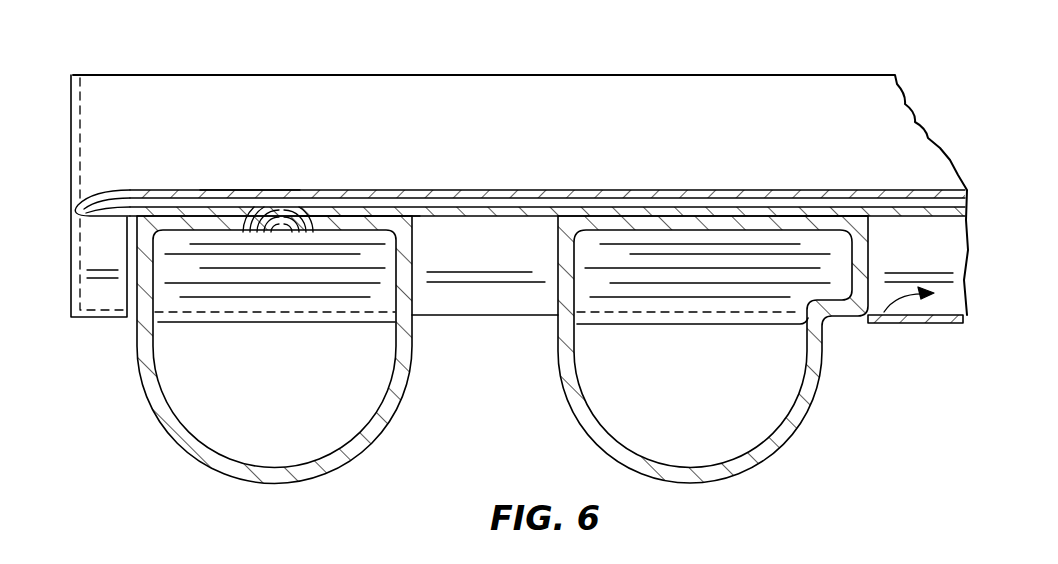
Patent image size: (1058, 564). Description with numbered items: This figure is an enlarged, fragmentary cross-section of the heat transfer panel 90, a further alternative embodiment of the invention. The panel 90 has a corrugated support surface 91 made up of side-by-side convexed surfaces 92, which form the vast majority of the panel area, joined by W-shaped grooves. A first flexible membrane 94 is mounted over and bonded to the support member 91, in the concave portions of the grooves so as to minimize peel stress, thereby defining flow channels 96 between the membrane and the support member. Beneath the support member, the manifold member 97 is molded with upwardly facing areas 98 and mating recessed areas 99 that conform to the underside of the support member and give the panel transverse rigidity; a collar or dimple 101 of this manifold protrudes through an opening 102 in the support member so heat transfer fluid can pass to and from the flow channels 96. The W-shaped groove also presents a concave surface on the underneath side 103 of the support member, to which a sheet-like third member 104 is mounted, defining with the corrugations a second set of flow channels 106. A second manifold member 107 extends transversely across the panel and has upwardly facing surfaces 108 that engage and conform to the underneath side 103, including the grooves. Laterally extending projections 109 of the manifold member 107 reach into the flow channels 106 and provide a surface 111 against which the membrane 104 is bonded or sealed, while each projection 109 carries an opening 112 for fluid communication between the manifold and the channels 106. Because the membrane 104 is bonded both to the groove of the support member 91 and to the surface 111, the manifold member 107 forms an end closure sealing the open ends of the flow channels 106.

The heat transfer panel 90 is at (840, 66).
The corrugated support surface 91 is at (470, 217).
The convexed surfaces 92 is at (556, 205).
The first flexible membrane 94 is at (390, 195).
The flow channels 96 is at (462, 202).
The manifold member 97 is at (377, 430).
The upwardly facing areas 98 is at (367, 213).
The recessed areas 99 is at (278, 213).
The collar or dimple 101 is at (248, 207).
The opening in support member 102 is at (318, 152).
The underneath side of support member 103 is at (513, 318).
The sheet-like third member 104 is at (927, 323).
The second set of flow channels 106 is at (852, 298).
The second manifold member 107 is at (797, 437).
The upwardly facing surfaces 108 is at (633, 215).
The laterally extending projections 109 is at (830, 224).
The surface 111 is at (850, 317).
The opening 112 is at (868, 262).